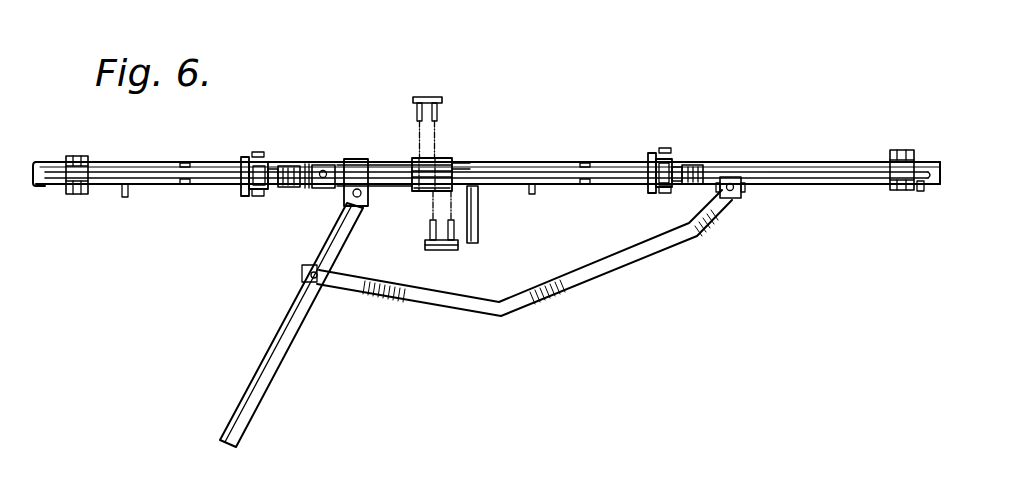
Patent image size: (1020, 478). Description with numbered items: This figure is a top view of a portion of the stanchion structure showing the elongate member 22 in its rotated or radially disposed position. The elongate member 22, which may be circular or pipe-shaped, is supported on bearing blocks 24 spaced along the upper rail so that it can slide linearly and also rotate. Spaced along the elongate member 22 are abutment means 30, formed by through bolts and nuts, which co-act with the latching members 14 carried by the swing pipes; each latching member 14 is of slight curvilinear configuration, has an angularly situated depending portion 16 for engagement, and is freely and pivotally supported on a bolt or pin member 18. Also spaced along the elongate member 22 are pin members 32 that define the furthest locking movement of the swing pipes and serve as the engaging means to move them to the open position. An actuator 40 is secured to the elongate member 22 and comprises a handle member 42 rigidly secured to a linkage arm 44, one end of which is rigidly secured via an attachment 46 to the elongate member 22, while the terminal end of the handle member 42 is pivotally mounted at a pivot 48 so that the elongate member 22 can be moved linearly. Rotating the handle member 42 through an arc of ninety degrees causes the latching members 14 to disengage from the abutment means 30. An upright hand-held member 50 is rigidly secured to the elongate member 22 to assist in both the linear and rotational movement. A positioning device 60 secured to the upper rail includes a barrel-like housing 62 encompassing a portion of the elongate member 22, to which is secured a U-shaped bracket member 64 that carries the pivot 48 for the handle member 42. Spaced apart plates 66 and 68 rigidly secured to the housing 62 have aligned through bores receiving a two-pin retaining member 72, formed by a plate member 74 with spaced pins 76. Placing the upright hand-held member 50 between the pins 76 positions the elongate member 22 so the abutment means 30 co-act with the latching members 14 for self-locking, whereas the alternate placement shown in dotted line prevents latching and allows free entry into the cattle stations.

The latching member 14 is at (251, 148).
The depending portion 16 is at (281, 188).
The bolt or pin member 18 is at (260, 197).
The elongate member 22 is at (607, 170).
The bearing block 24 is at (72, 156).
The abutment means 30 is at (186, 192).
The pin member 32 is at (126, 198).
The actuator 40 is at (268, 311).
The handle member 42 is at (250, 397).
The linkage arm 44 is at (592, 278).
The attachment 46 is at (733, 197).
The pivot 48 is at (343, 199).
The upright hand-held member 50 is at (480, 230).
The positioning device 60 is at (409, 150).
The barrel-like housing 62 is at (396, 166).
The U-shaped bracket member 64 is at (333, 165).
The plate 66 is at (443, 158).
The plate 68 is at (412, 190).
The two-pin retaining member 72 is at (433, 90).
The plate member 74 is at (430, 251).
The pins 76 is at (448, 222).